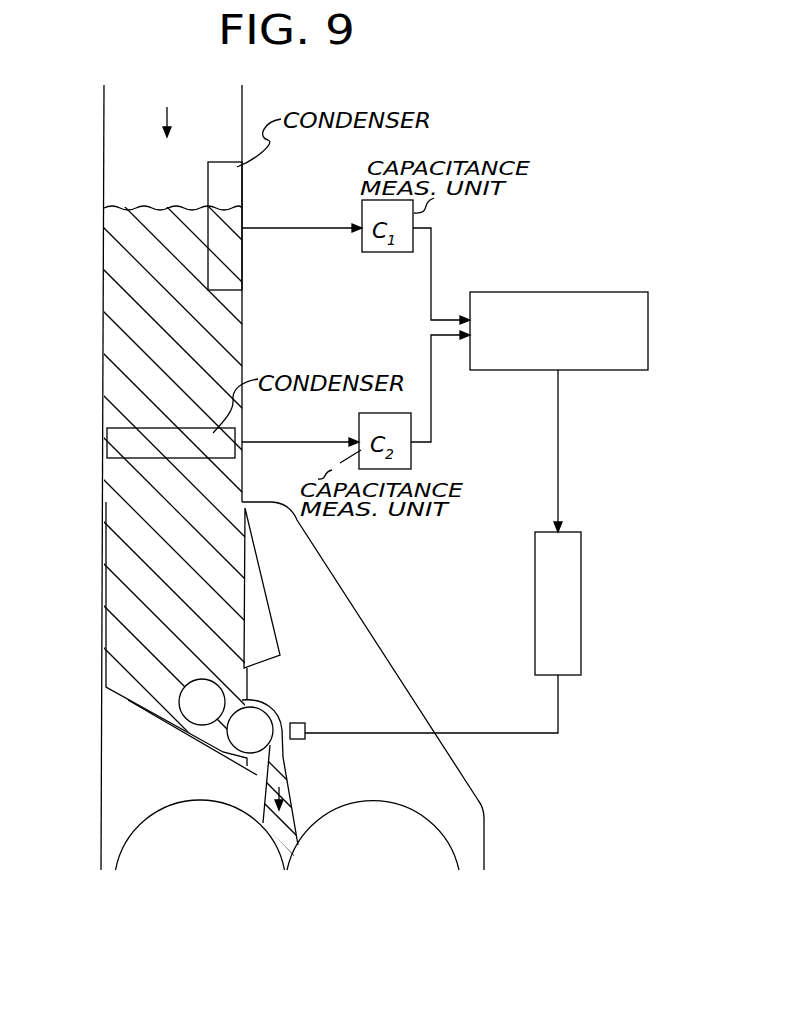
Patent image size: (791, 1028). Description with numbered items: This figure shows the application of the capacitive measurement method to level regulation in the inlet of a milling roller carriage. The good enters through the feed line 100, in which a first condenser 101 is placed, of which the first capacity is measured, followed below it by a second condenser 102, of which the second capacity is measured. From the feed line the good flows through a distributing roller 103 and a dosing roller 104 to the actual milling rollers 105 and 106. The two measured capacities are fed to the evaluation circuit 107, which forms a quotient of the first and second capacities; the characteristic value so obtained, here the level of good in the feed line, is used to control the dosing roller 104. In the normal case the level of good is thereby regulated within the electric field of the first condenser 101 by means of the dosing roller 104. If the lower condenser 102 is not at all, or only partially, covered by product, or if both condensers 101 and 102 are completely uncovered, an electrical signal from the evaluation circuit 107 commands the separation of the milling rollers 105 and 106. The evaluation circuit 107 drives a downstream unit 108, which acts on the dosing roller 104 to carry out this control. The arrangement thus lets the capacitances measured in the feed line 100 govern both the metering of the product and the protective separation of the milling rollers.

The feed line 100 is at (192, 98).
The first condenser 101 is at (230, 190).
The second condenser 102 is at (112, 443).
The distributing roller 103 is at (210, 698).
The dosing roller 104 is at (260, 722).
The milling roller 105 is at (178, 800).
The milling roller 106 is at (365, 800).
The evaluation circuit 107 is at (560, 291).
The indicating/control unit 108 is at (578, 585).